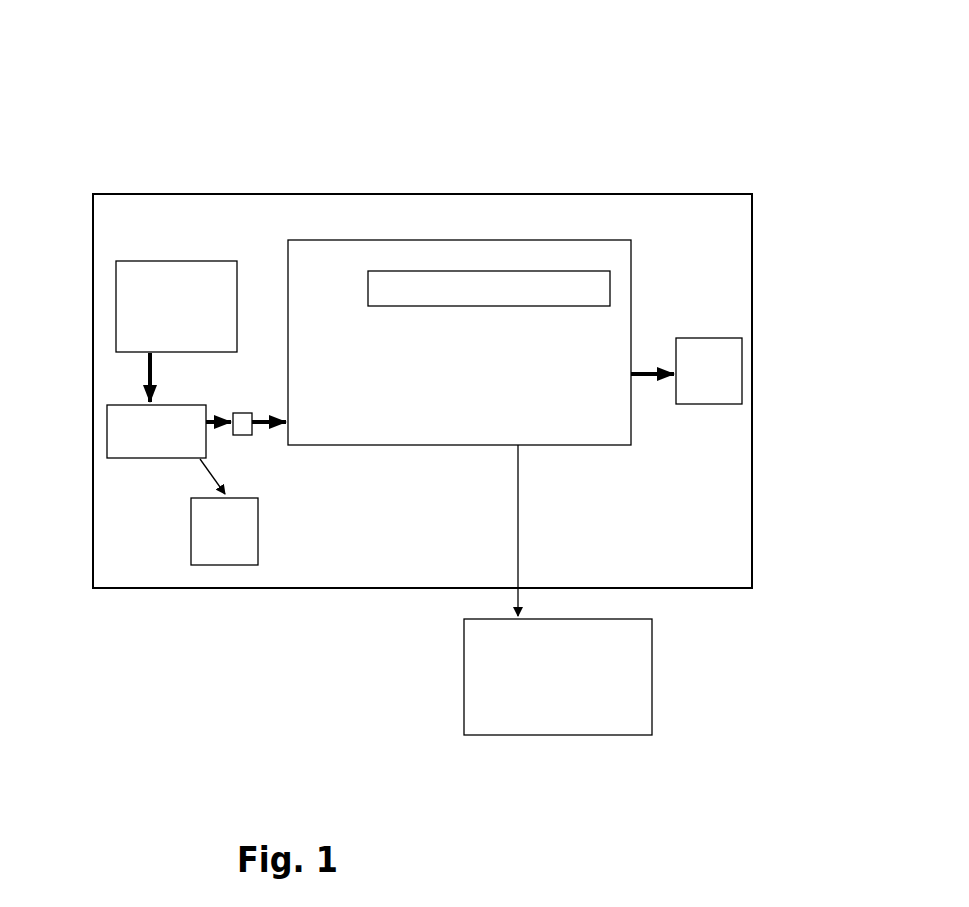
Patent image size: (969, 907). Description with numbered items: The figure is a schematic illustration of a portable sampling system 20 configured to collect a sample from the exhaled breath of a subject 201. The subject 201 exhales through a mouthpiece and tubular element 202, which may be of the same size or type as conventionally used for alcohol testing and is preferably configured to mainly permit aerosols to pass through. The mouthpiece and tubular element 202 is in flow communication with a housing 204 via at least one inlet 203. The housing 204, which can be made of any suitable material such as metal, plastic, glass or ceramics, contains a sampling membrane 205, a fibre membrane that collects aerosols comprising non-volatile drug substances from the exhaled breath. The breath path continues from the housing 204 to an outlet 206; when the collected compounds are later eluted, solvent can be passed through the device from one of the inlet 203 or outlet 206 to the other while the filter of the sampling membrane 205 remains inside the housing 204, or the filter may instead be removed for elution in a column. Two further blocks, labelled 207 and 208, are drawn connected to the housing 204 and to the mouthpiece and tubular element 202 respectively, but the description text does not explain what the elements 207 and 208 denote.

The sampling system 20 is at (426, 160).
The subject 201 is at (177, 262).
The mouthpiece and tubular element 202 is at (160, 458).
The inlet 203 is at (248, 436).
The housing 204 is at (631, 342).
The sampling membrane 205 is at (612, 290).
The outlet 206 is at (722, 404).
The external device 207 is at (562, 735).
The auxiliary unit 208 is at (226, 566).